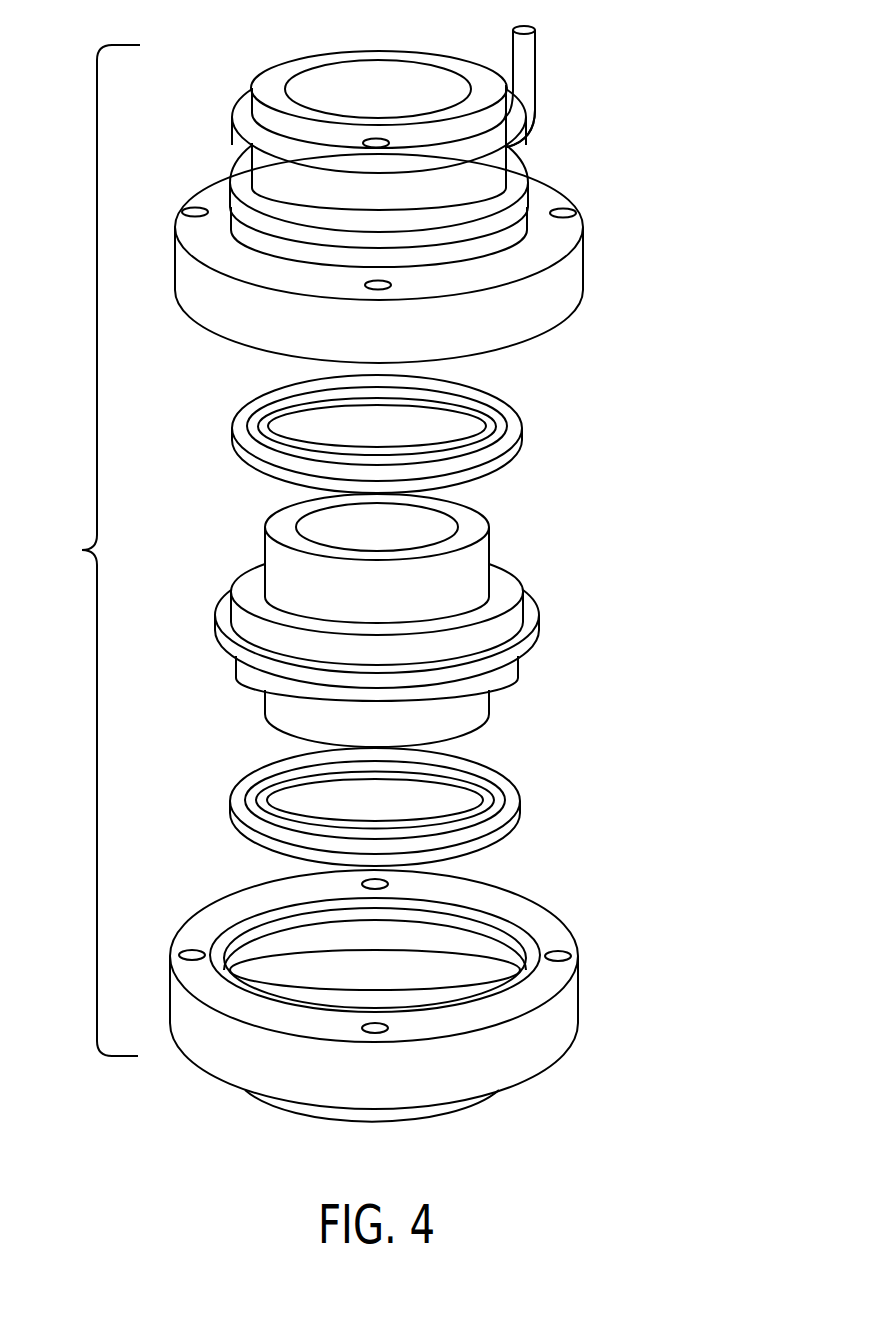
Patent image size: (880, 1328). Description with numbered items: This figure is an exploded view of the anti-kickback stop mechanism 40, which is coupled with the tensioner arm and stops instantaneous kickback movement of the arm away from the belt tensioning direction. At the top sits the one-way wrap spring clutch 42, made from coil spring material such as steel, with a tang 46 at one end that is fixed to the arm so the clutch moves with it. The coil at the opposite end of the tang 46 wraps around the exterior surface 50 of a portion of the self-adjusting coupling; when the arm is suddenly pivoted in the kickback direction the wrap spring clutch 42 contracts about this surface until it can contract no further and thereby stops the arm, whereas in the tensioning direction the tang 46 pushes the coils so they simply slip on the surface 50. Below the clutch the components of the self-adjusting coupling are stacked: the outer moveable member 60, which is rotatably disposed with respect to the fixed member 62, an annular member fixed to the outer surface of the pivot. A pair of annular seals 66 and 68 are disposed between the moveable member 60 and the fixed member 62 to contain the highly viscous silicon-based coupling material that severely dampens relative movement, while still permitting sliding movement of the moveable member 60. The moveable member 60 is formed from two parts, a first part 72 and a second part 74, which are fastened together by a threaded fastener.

The anti-kickback stop mechanism 40 is at (82, 550).
The one-way wrap spring clutch 42 is at (552, 118).
The tang 46 is at (523, 62).
The exterior surface 50 is at (267, 170).
The moveable member 60 is at (419, 200).
The fixed member 62 is at (503, 592).
The annular seal 66 is at (512, 433).
The annular seal 68 is at (512, 802).
The first part 72 is at (548, 300).
The second part 74 is at (562, 1013).